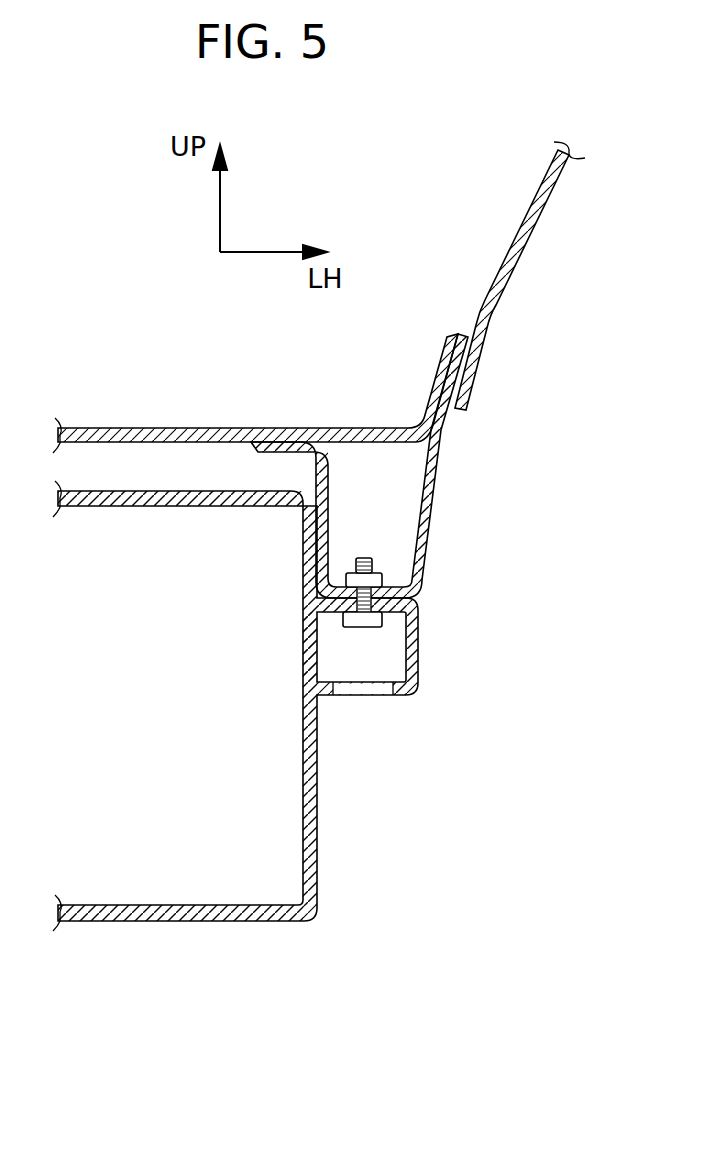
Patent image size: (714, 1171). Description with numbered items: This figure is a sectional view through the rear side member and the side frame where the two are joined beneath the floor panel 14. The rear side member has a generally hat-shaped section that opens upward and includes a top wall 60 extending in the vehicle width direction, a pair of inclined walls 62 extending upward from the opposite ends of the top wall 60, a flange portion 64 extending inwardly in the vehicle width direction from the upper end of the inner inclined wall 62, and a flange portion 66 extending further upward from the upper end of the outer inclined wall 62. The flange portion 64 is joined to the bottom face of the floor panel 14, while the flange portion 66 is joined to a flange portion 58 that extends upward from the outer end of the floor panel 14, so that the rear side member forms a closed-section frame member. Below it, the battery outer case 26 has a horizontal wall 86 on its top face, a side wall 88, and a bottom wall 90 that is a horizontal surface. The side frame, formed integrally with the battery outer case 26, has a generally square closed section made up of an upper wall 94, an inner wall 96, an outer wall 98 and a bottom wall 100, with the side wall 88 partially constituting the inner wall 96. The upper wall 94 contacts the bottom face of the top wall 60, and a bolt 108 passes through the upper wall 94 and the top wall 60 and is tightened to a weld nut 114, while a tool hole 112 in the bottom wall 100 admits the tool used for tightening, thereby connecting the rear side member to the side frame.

The floor panel 14 is at (96, 428).
The battery outer case 26 is at (333, 882).
The flange portion 58 is at (446, 361).
The top wall 60 is at (396, 577).
The inclined wall 62 is at (312, 496).
The flange portion 64 is at (262, 452).
The flange portion 66 is at (457, 410).
The horizontal wall 86 is at (163, 491).
The side wall 88 is at (317, 818).
The bottom wall 90 is at (185, 921).
The upper wall 94 is at (332, 613).
The inner wall 96 is at (316, 657).
The outer wall 98 is at (419, 662).
The bottom wall 100 is at (404, 688).
The bolt 108 is at (370, 630).
The tool hole 112 is at (363, 688).
The weld nut 114 is at (354, 559).